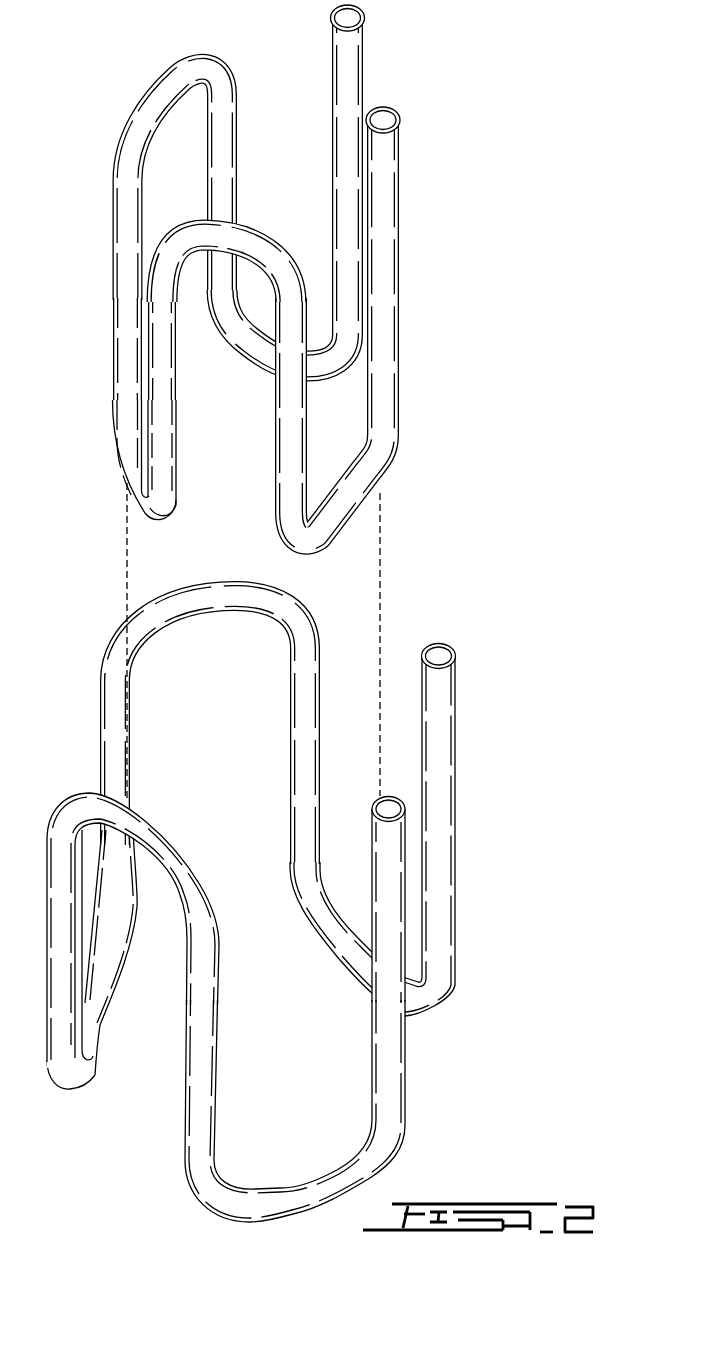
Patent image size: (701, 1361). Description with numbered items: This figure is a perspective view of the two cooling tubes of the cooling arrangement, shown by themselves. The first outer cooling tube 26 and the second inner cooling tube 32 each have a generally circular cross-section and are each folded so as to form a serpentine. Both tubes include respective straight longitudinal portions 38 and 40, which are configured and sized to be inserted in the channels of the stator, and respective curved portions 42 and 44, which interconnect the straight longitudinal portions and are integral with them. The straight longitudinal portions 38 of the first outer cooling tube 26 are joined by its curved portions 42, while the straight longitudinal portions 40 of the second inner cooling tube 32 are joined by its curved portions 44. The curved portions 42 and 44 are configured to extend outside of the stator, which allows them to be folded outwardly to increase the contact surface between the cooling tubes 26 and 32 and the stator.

The first outer cooling tube 26 is at (299, 852).
The second inner cooling tube 32 is at (309, 272).
The straight longitudinal portions 38 is at (390, 1043).
The straight longitudinal portions 40 is at (287, 438).
The curved portions 42 is at (215, 605).
The curved portions 44 is at (233, 245).